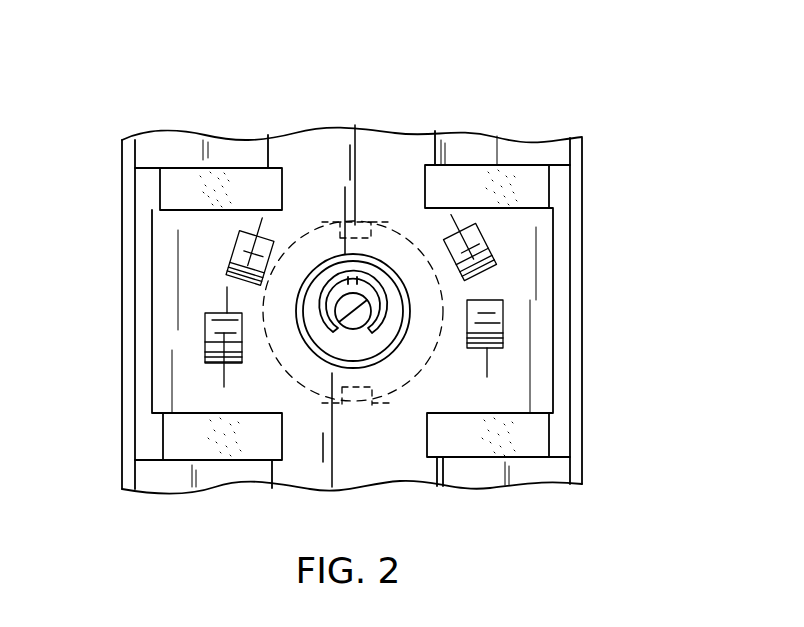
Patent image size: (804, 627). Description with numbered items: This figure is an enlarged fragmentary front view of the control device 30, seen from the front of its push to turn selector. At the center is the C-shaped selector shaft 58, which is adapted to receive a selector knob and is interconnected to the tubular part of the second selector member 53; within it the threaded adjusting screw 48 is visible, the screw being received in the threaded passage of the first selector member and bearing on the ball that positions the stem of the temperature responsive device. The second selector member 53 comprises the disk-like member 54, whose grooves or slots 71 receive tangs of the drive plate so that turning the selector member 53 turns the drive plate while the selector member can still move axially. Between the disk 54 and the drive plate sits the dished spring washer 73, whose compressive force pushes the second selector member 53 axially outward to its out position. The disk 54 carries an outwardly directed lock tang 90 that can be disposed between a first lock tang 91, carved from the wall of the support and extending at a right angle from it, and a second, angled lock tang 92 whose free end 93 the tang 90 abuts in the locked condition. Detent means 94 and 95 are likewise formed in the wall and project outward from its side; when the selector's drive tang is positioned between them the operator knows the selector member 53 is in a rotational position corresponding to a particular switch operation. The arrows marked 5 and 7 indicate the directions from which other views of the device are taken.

The control device 30 is at (612, 116).
The threaded adjusting screw 48 is at (302, 402).
The second selector member 53 is at (380, 223).
The disk-like member 54 is at (392, 404).
The C-shaped selector shaft 58 is at (333, 287).
The grooves or slots 71 is at (355, 404).
The dished spring washer member 73 is at (356, 232).
The lock tang 90 is at (266, 283).
The first lock tang 91 is at (233, 262).
The second lock tang 92 is at (207, 330).
The free end 93 is at (222, 313).
The detent means 94 is at (490, 311).
The detent means 95 is at (487, 242).
The section line of FIG. 5 is at (278, 226).
The section line of FIG. 7 is at (434, 228).